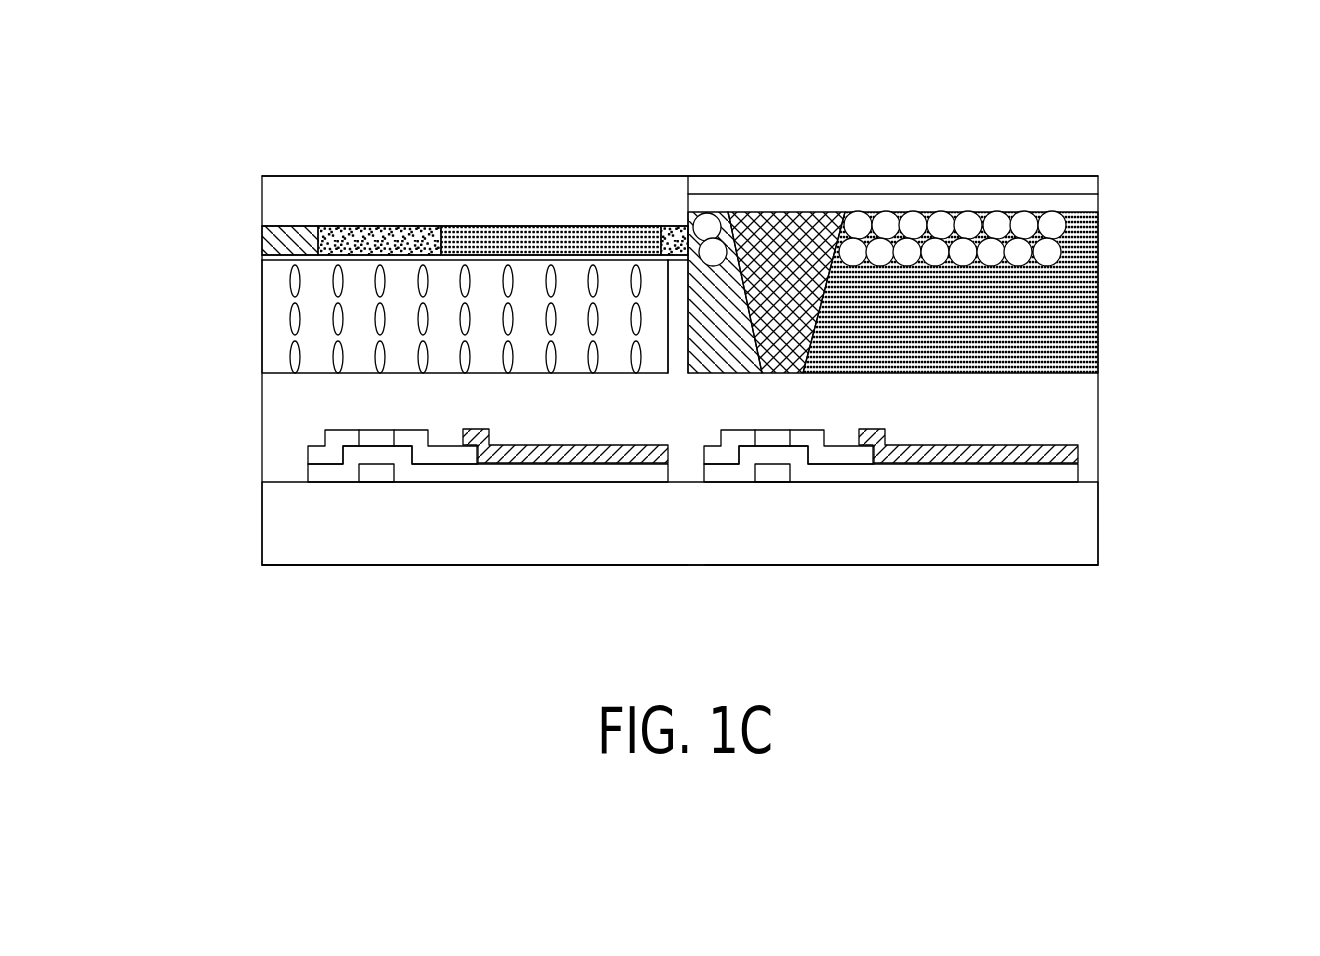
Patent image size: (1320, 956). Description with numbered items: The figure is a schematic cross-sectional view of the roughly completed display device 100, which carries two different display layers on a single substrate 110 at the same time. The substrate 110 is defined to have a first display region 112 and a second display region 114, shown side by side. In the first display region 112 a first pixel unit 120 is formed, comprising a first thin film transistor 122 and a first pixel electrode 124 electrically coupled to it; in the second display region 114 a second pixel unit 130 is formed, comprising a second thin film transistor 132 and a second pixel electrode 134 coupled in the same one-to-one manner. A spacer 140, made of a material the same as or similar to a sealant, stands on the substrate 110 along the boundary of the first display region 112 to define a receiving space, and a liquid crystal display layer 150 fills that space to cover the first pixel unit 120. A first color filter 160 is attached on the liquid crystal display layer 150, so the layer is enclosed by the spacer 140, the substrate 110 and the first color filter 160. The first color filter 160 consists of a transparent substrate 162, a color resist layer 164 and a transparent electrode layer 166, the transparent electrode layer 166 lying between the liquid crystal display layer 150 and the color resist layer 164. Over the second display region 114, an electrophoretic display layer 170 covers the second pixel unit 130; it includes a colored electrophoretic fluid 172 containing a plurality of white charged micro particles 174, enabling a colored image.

The display device 100 is at (1305, 590).
The substrate 110 is at (1072, 533).
The first display region 112 is at (688, 577).
The second display region 114 is at (1097, 577).
The first pixel unit 120 is at (595, 106).
The first thin film transistor 122 is at (386, 412).
The first pixel electrode 124 is at (552, 447).
The second pixel unit 130 is at (985, 106).
The second thin film transistor 132 is at (776, 412).
The second pixel electrode 134 is at (942, 447).
The spacer 140 is at (675, 270).
The liquid crystal display layer 150 is at (280, 338).
The first color filter 160 is at (158, 175).
The transparent substrate 162 is at (273, 197).
The color resist layer 164 is at (262, 237).
The transparent electrode layer 166 is at (260, 258).
The electrophoretic display layer 170 is at (934, 236).
The colored electrophoretic fluid 172 is at (1083, 228).
The white charged micro particles 174 is at (1022, 212).